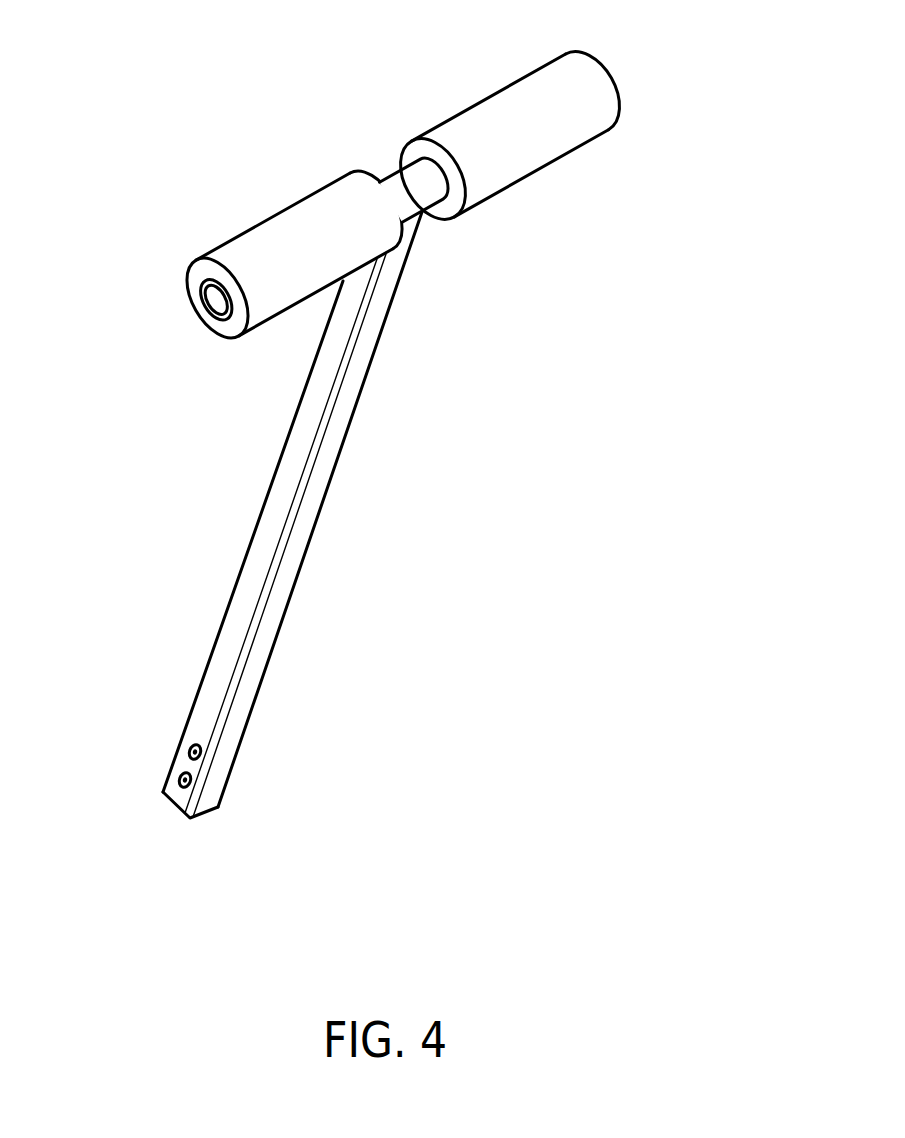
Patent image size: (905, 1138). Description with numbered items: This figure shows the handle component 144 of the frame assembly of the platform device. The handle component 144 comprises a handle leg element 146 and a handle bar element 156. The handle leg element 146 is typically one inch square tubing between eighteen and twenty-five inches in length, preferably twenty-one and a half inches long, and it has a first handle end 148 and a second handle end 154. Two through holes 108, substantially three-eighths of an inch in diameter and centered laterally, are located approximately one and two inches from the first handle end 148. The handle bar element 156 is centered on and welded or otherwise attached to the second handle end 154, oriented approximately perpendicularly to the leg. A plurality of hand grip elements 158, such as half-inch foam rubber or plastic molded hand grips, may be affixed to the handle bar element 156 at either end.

The handle component 144 is at (422, 446).
The handle leg element 146 is at (292, 514).
The first handle end 148 is at (203, 819).
The second handle end 154 is at (421, 213).
The handle bar element 156 is at (403, 188).
The hand grip elements 158 is at (403, 194).
The through holes 108 is at (186, 748).